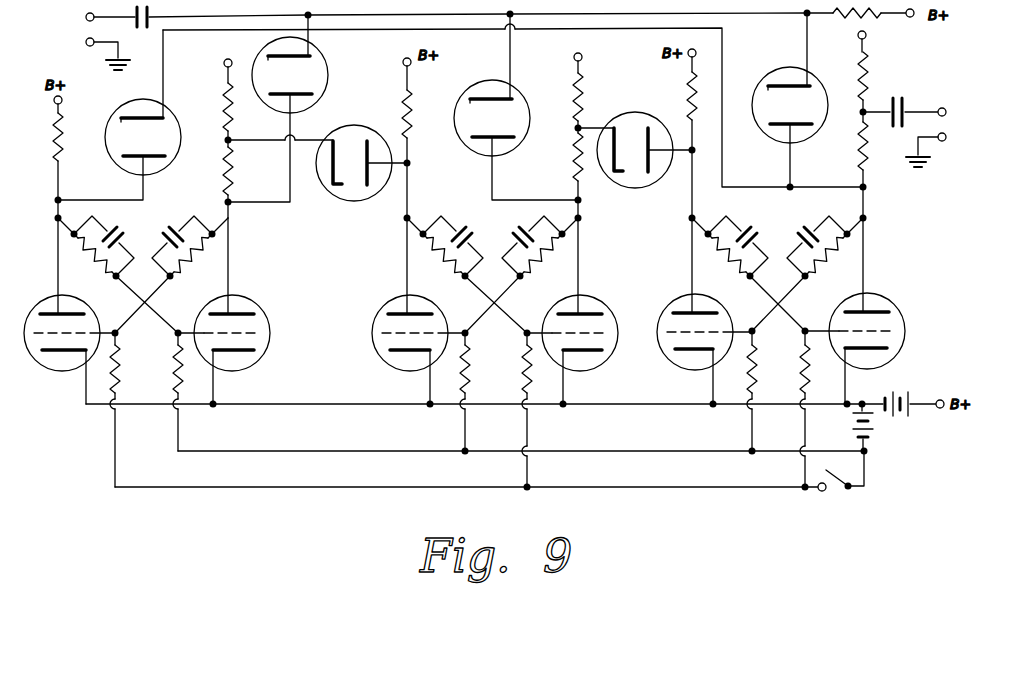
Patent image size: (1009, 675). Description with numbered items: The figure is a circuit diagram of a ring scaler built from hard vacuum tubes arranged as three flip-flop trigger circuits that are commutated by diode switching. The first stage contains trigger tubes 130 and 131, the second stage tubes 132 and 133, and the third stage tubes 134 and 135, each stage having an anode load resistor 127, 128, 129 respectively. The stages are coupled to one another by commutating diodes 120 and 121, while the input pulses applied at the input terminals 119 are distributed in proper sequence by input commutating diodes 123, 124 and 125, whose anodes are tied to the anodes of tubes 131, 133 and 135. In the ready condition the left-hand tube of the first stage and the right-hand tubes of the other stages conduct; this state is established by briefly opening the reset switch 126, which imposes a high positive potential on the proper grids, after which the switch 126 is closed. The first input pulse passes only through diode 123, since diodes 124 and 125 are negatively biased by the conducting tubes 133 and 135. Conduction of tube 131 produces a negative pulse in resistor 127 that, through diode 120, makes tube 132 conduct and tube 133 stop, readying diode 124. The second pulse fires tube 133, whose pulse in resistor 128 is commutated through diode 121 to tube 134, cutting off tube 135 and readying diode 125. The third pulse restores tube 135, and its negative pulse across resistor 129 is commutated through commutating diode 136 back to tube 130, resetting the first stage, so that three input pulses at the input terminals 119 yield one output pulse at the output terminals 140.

The input terminals 119 is at (80, 42).
The commutating diode 120 is at (347, 204).
The commutating diode 121 is at (653, 190).
The commutating diode 123 is at (328, 62).
The commutating diode 124 is at (473, 157).
The commutating diode 125 is at (780, 143).
The reset switch 126 is at (827, 492).
The anode load resistor 127 is at (224, 101).
The anode load resistor 128 is at (583, 90).
The anode load resistor 129 is at (870, 76).
The trigger tube 130 is at (72, 373).
The trigger tube 131 is at (236, 373).
The trigger tube 132 is at (398, 373).
The trigger tube 133 is at (583, 373).
The trigger tube 134 is at (700, 369).
The trigger tube 135 is at (882, 366).
The commutating diode 136 is at (122, 176).
The output terminals 140 is at (948, 134).